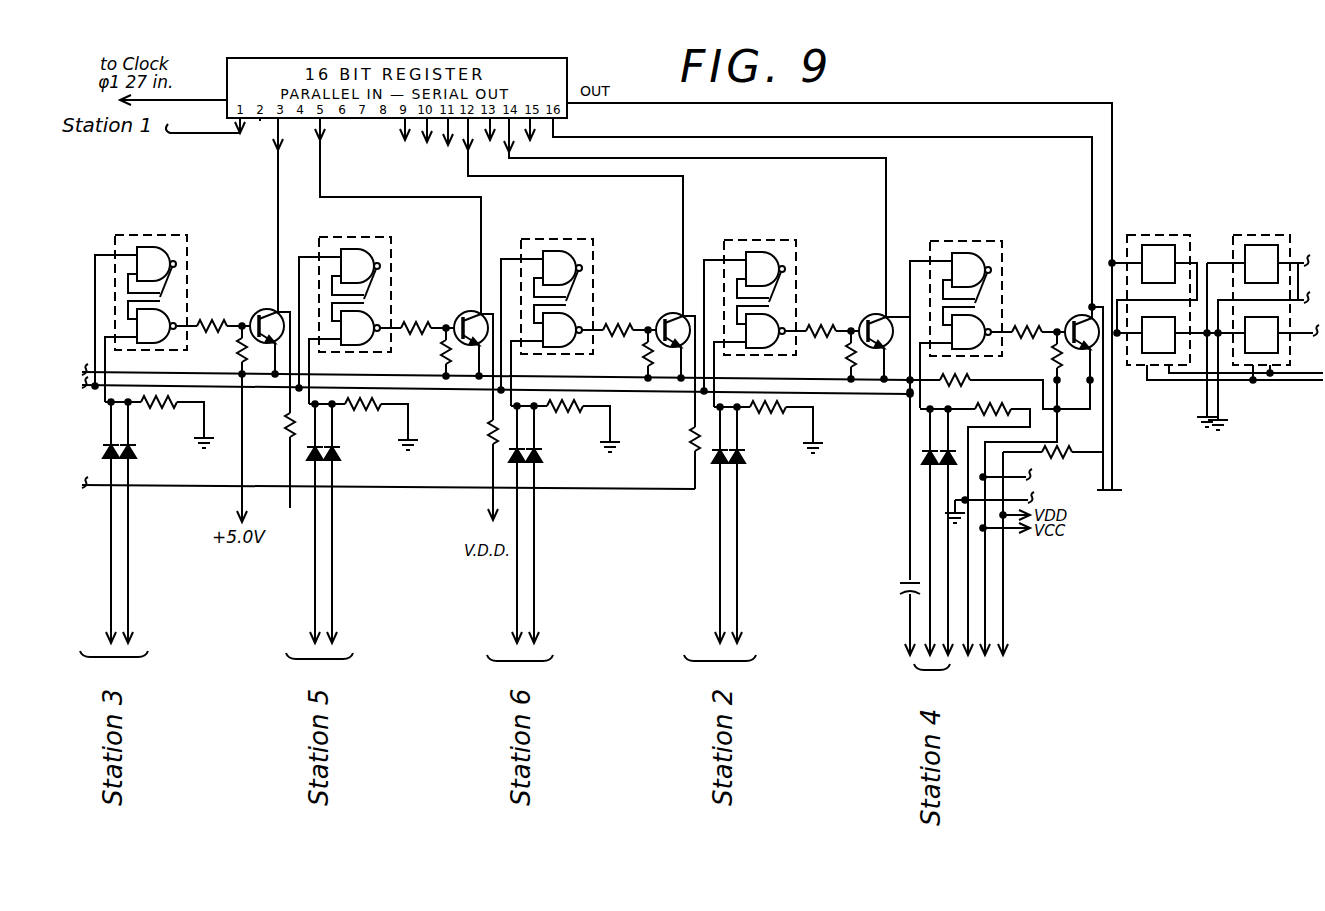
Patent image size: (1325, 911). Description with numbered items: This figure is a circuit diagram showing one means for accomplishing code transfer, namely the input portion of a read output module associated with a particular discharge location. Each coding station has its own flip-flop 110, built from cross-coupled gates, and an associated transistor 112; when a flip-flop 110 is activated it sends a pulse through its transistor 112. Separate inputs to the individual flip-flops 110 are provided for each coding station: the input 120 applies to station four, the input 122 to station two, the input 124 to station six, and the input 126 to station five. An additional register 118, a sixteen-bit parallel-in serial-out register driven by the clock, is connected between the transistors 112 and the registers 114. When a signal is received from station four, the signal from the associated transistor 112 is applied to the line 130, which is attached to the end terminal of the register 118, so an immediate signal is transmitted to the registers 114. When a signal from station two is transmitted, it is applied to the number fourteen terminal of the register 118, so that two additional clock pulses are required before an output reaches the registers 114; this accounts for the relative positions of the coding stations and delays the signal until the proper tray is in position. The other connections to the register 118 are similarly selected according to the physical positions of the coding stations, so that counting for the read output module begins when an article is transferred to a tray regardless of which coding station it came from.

The flip-flop 110 is at (340, 240).
The transistor 112 is at (263, 311).
The register 114 is at (1179, 235).
The additional register 118 is at (260, 121).
The input 120 is at (913, 672).
The input 122 is at (688, 669).
The input 124 is at (489, 668).
The input 126 is at (287, 664).
The line 130 is at (660, 112).